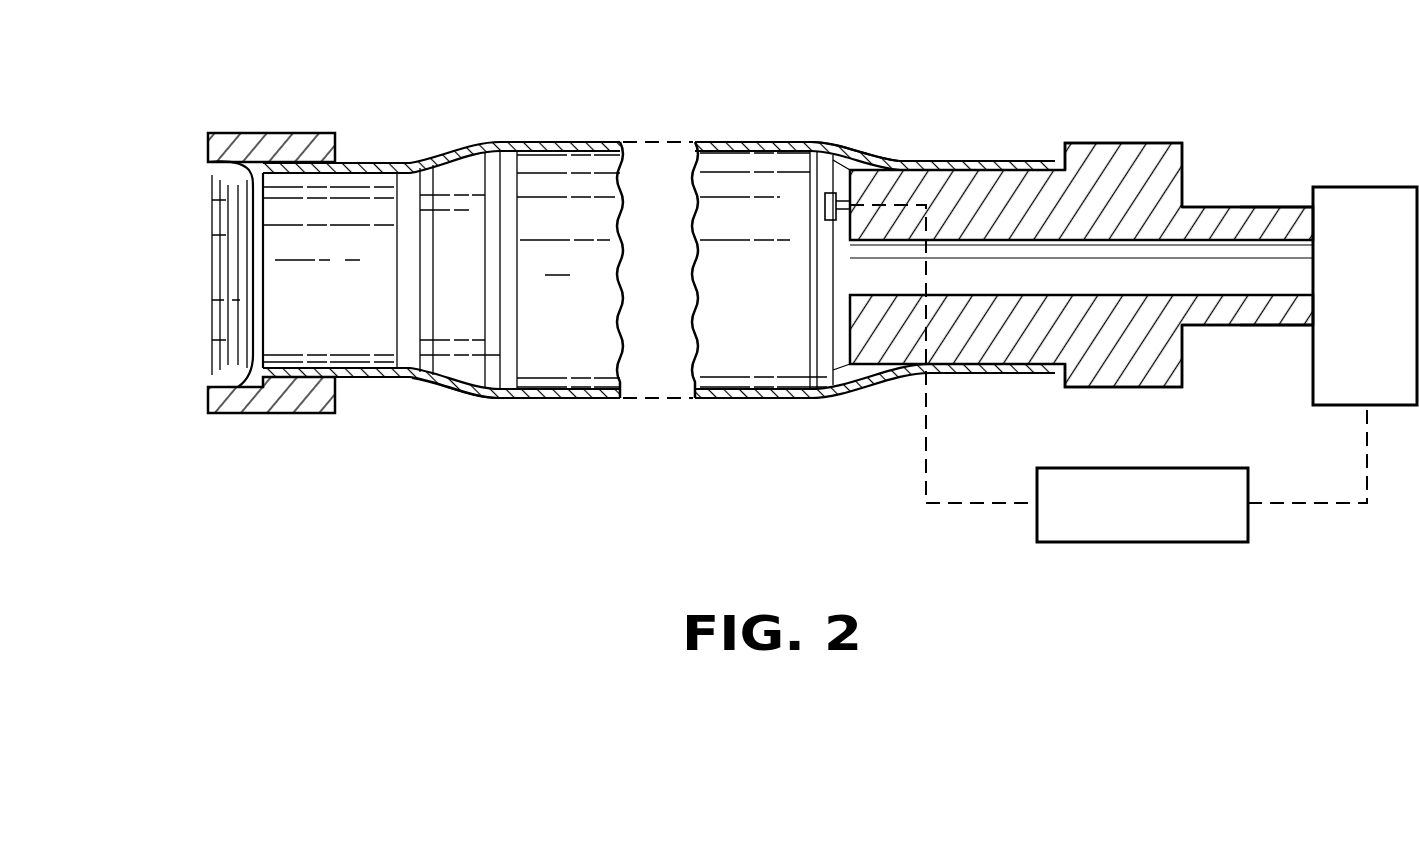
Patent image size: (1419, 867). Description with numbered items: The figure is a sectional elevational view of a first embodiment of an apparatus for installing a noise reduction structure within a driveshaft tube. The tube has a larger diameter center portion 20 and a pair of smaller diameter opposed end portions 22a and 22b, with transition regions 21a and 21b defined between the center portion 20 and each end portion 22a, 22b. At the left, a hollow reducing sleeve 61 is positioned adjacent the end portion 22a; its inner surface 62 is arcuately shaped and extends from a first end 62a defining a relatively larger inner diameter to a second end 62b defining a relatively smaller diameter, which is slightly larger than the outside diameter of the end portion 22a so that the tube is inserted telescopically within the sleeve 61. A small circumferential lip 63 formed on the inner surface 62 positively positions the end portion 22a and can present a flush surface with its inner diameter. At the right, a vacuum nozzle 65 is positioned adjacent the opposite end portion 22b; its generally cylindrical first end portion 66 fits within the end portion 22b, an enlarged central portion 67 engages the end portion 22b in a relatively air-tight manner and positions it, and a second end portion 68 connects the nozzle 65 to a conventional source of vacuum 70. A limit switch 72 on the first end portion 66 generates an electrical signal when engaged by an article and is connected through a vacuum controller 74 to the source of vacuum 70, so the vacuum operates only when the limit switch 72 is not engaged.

The center portion 20 is at (752, 142).
The transition region 21a is at (460, 393).
The transition region 21b is at (866, 141).
The end portion 22a is at (366, 380).
The end portion 22b is at (1013, 160).
The reducing sleeve 61 is at (272, 130).
The inner surface 62 is at (243, 386).
The first end 62a is at (208, 162).
The second end 62b is at (335, 163).
The circumferential lip 63 is at (262, 368).
The vacuum nozzle 65 is at (1108, 135).
The first end portion 66 is at (950, 200).
The enlarged central portion 67 is at (1162, 170).
The second end portion 68 is at (1258, 218).
The source of vacuum 70 is at (1386, 297).
The limit switch 72 is at (827, 217).
The vacuum controller 74 is at (1203, 541).